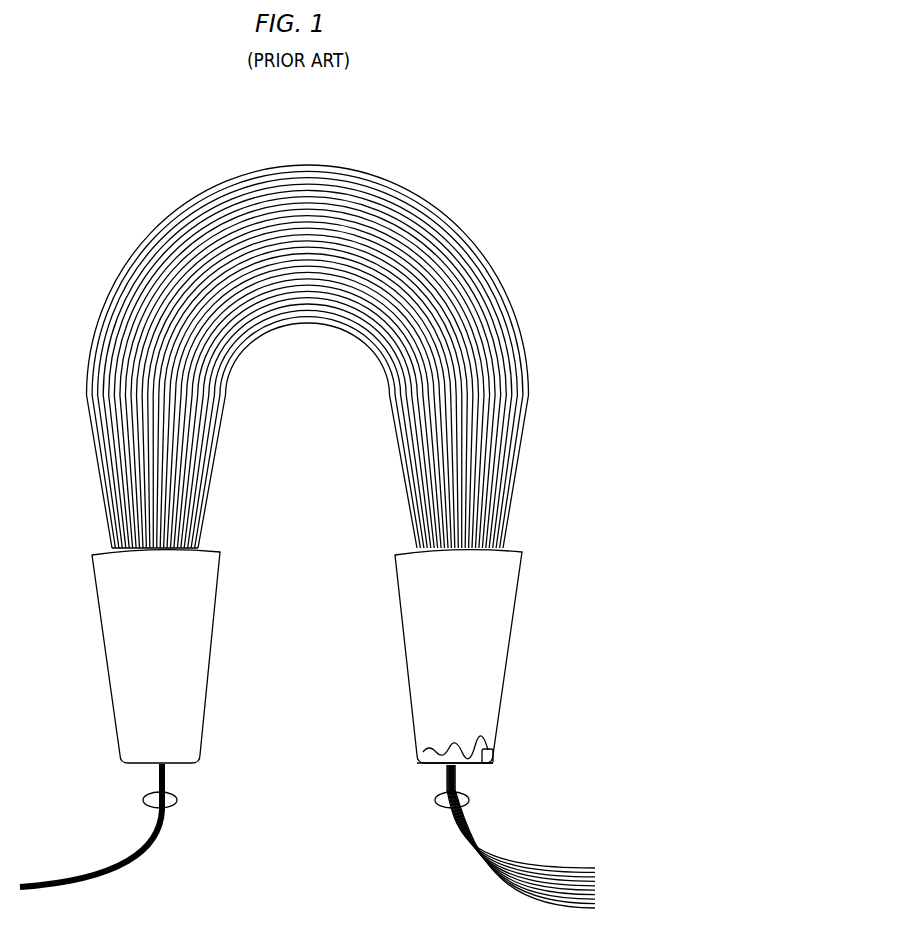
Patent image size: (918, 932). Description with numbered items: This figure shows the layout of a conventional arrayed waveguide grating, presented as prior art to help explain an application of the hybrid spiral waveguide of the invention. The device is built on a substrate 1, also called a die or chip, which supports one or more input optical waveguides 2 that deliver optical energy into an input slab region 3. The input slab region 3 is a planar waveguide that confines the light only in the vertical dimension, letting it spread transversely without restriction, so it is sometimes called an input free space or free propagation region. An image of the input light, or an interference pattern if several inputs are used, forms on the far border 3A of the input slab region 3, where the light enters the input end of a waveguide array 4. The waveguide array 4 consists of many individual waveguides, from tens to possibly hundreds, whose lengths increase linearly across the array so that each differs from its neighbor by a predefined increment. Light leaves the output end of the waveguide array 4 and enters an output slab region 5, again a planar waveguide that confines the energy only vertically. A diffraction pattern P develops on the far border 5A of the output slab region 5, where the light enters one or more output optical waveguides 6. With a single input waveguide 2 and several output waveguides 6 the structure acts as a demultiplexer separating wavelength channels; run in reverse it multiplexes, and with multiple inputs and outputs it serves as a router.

The substrate 1 is at (567, 148).
The input optical waveguide 2 is at (178, 801).
The input slab region 3 is at (205, 636).
The far border of input slab region 3A is at (216, 552).
The waveguide array 4 is at (482, 247).
The output slab region 5 is at (407, 610).
The far border of output slab region 5A is at (432, 766).
The output optical waveguide 6 is at (468, 804).
The diffraction pattern P is at (492, 743).